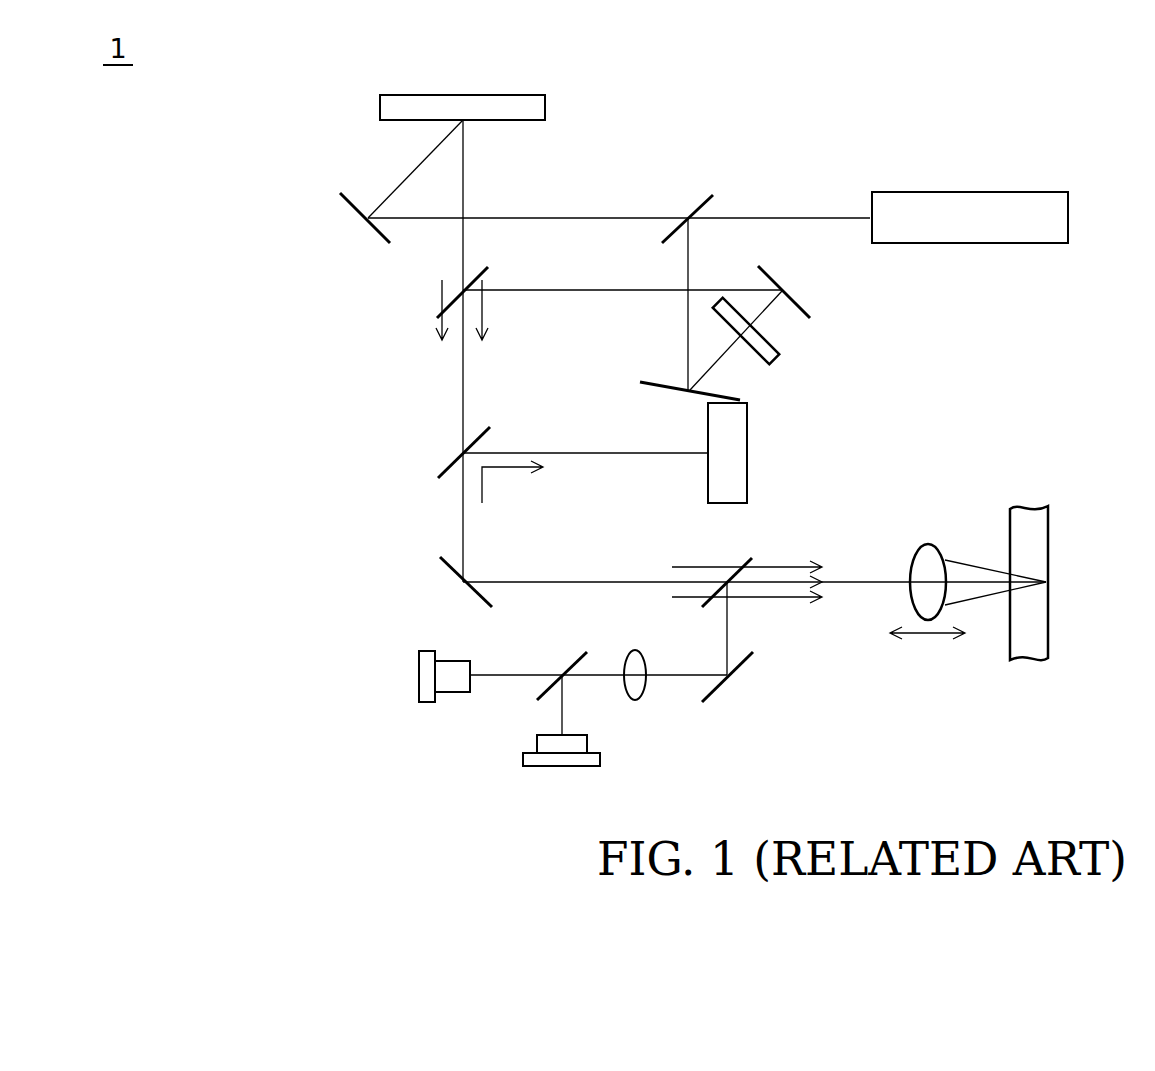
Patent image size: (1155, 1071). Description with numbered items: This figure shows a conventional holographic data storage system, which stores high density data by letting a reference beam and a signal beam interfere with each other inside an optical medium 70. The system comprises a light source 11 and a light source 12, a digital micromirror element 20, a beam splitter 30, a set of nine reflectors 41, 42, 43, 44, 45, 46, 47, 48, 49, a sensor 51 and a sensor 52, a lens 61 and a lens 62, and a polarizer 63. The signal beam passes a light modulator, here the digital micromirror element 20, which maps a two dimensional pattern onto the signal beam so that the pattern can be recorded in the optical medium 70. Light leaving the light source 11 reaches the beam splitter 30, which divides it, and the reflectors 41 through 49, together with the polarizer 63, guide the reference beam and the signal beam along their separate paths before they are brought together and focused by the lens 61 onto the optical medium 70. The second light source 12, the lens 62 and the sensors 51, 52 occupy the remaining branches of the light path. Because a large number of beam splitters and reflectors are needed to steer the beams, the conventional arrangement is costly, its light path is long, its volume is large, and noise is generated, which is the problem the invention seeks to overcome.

The light source 11 is at (968, 192).
The light source 12 is at (537, 766).
The digital micromirror element 20 is at (380, 103).
The beam splitter 30 is at (705, 195).
The reflector 41 is at (340, 198).
The reflector 42 is at (808, 310).
The reflector 43 is at (663, 388).
The reflector 44 is at (478, 273).
The reflector 45 is at (440, 558).
The reflector 46 is at (440, 465).
The reflector 47 is at (741, 676).
The reflector 48 is at (575, 653).
The reflector 49 is at (750, 560).
The sensor 51 is at (750, 412).
The sensor 52 is at (432, 702).
The lens 61 is at (928, 545).
The lens 62 is at (637, 705).
The polarizer 63 is at (777, 343).
The optical medium 70 is at (1050, 552).